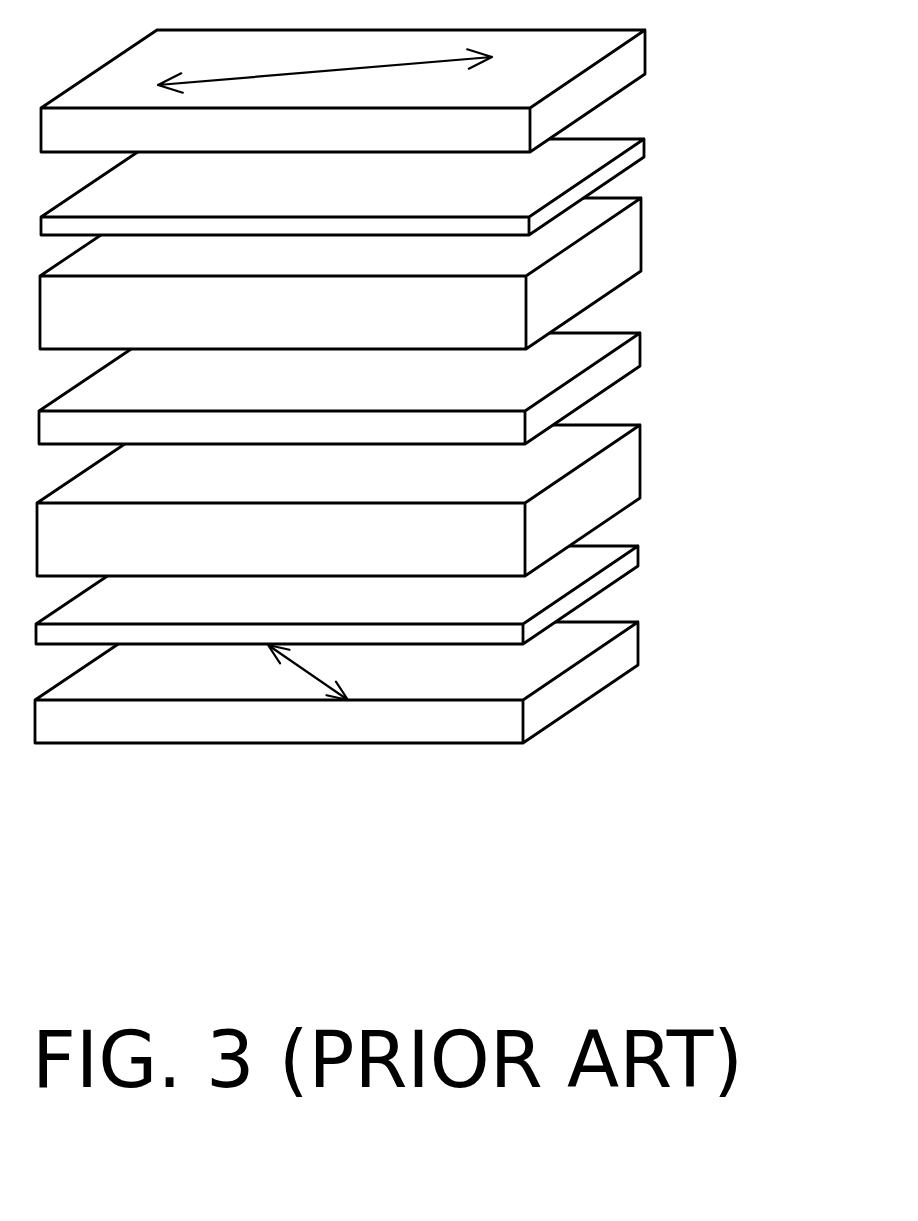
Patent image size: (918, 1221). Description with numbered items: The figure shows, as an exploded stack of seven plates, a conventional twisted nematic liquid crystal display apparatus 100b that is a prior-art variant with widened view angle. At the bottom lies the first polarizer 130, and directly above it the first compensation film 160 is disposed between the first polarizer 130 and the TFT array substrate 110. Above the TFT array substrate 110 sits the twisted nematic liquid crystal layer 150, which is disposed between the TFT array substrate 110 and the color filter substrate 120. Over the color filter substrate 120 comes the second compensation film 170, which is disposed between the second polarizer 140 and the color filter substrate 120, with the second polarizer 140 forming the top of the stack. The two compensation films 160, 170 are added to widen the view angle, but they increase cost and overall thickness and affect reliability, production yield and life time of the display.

The twisted nematic liquid crystal display apparatus 100b is at (797, 800).
The TFT array substrate 110 is at (613, 480).
The color filter substrate 120 is at (613, 250).
The first polarizer 130 is at (615, 660).
The second polarizer 140 is at (630, 62).
The twisted nematic liquid crystal layer 150 is at (623, 365).
The first compensation film 160 is at (622, 570).
The second compensation film 170 is at (632, 157).